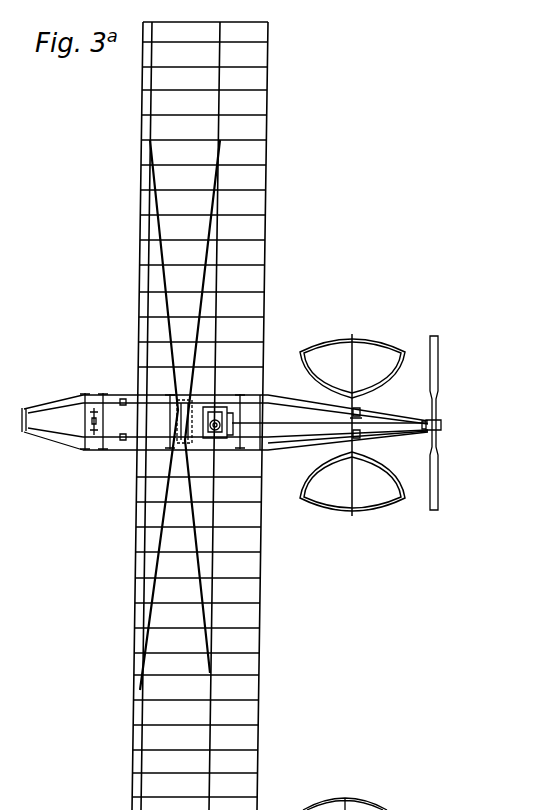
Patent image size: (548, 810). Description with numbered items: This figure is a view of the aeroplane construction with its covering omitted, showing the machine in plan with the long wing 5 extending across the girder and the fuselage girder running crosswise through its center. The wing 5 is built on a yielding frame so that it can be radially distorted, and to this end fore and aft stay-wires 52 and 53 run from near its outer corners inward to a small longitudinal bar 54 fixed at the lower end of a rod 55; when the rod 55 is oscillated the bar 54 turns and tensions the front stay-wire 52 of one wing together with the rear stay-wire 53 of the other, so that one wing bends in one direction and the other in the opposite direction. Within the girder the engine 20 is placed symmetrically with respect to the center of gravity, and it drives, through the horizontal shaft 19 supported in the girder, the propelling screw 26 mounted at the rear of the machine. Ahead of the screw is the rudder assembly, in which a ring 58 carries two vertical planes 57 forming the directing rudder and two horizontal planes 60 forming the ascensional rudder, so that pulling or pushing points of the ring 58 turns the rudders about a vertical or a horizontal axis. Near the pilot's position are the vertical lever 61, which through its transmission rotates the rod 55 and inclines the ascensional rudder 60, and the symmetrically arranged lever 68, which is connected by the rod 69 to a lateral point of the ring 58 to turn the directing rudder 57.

The wing 5 is at (142, 105).
The front stay-wire 52 is at (162, 252).
The rear stay-wire 53 is at (207, 278).
The engine 20 is at (252, 408).
The vertical lever 61 is at (126, 398).
The lever 68 is at (122, 441).
The longitudinal bar 54 is at (197, 412).
The rod 55 is at (228, 404).
The horizontal shaft 19 is at (272, 428).
The vertical plane of directing rudder 57 is at (316, 438).
The horizontal plane of ascensional rudder 60 is at (352, 425).
The ring 58 is at (359, 412).
The rod 69 is at (340, 447).
The propelling screw 26 is at (437, 466).